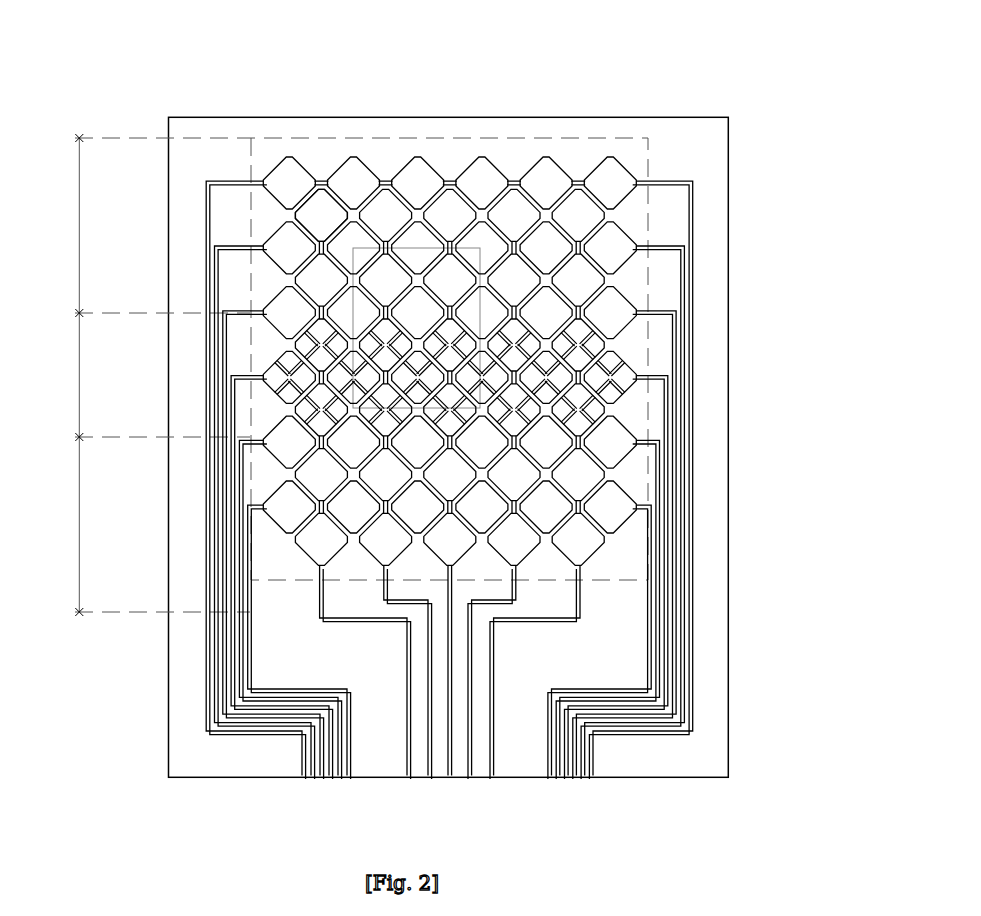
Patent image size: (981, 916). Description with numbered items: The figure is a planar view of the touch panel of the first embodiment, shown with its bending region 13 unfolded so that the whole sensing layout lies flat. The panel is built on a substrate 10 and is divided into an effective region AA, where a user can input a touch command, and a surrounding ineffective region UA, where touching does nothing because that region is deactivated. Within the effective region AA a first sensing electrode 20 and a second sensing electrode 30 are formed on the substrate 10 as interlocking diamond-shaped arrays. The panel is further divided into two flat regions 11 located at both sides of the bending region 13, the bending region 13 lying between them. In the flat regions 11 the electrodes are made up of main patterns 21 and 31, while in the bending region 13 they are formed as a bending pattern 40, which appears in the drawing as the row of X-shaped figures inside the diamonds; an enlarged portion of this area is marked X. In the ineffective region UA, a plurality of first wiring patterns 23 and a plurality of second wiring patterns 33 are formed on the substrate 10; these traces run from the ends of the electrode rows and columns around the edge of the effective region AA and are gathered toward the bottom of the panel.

The substrate 10 is at (705, 133).
The ineffective region UA is at (703, 155).
The effective region AA is at (510, 162).
The enlarged region X is at (412, 246).
The flat regions 11 is at (148, 375).
The bending region 13 is at (63, 379).
The first sensing electrode 20 is at (630, 158).
The main pattern 21 is at (643, 215).
The first wiring patterns 23 is at (695, 428).
The second sensing electrode 30 is at (349, 311).
The main pattern 31 is at (325, 207).
The second wiring patterns 33 is at (580, 605).
The bending pattern 40 is at (646, 378).